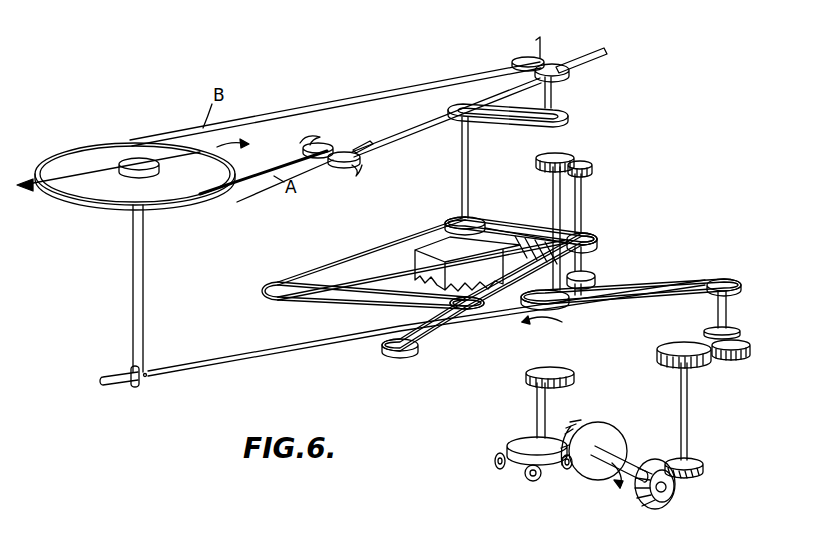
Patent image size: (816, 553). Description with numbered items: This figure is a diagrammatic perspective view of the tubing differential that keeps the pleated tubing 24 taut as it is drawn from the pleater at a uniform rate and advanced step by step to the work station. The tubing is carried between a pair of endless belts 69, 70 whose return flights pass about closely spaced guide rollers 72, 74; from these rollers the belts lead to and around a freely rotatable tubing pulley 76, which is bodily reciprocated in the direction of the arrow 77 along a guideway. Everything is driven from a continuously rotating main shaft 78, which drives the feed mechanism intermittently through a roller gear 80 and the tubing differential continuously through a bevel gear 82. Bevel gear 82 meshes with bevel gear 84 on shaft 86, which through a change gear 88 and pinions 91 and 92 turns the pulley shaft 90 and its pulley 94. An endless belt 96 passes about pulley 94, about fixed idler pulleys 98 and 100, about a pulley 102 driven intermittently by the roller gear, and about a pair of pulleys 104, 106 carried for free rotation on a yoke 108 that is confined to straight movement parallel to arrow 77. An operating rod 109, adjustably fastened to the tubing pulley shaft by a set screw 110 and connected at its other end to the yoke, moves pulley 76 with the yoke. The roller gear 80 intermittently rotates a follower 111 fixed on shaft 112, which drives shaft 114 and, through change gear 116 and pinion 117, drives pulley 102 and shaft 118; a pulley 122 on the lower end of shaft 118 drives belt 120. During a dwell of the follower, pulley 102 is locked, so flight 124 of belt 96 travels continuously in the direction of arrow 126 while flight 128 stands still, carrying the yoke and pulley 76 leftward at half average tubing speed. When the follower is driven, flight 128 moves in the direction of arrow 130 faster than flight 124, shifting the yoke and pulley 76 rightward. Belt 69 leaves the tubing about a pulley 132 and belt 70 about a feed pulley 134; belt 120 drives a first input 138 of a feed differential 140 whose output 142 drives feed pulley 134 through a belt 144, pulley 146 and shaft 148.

The tubing 24 is at (365, 146).
The endless belt 69 is at (543, 50).
The endless belt 70 is at (405, 83).
The guide roller 72 is at (341, 164).
The guide roller 74 is at (318, 147).
The tubing pulley 76 is at (80, 163).
The arrow 77 is at (244, 146).
The main shaft 78 is at (617, 468).
The roller gear 80 is at (604, 430).
The bevel gear 82 is at (675, 488).
The bevel gear 84 is at (705, 470).
The shaft 86 is at (689, 412).
The change gear 88 is at (660, 367).
The pulley shaft 90 is at (729, 310).
The pinion 91 is at (742, 331).
The pinion 92 is at (752, 350).
The pulley 94 is at (738, 281).
The endless belt 96 is at (673, 280).
The idler pulley 98 is at (395, 356).
The idler pulley 100 is at (268, 286).
The pulley 102 is at (592, 235).
The pulley 104 is at (430, 311).
The pulley 106 is at (569, 298).
The yoke 108 is at (486, 313).
The operating rod 109 is at (196, 372).
The set screw 110 is at (144, 381).
The follower 111 is at (515, 474).
The shaft 112 is at (536, 394).
The shaft 114 is at (560, 356).
The change gear 116 is at (568, 150).
The pinion 117 is at (594, 167).
The shaft 118 is at (584, 192).
The belt 120 is at (495, 229).
The pulley 122 is at (594, 273).
The flight 124 is at (425, 356).
The arrow 126 is at (512, 330).
The flight 128 is at (322, 268).
The arrow 130 is at (369, 250).
The pulley 132 is at (528, 56).
The feed pulley 134 is at (575, 78).
The first input 138 is at (478, 218).
The feed differential 140 is at (425, 250).
The output 142 is at (461, 160).
The belt 144 is at (500, 125).
The pulley 146 is at (567, 113).
The shaft 148 is at (544, 94).